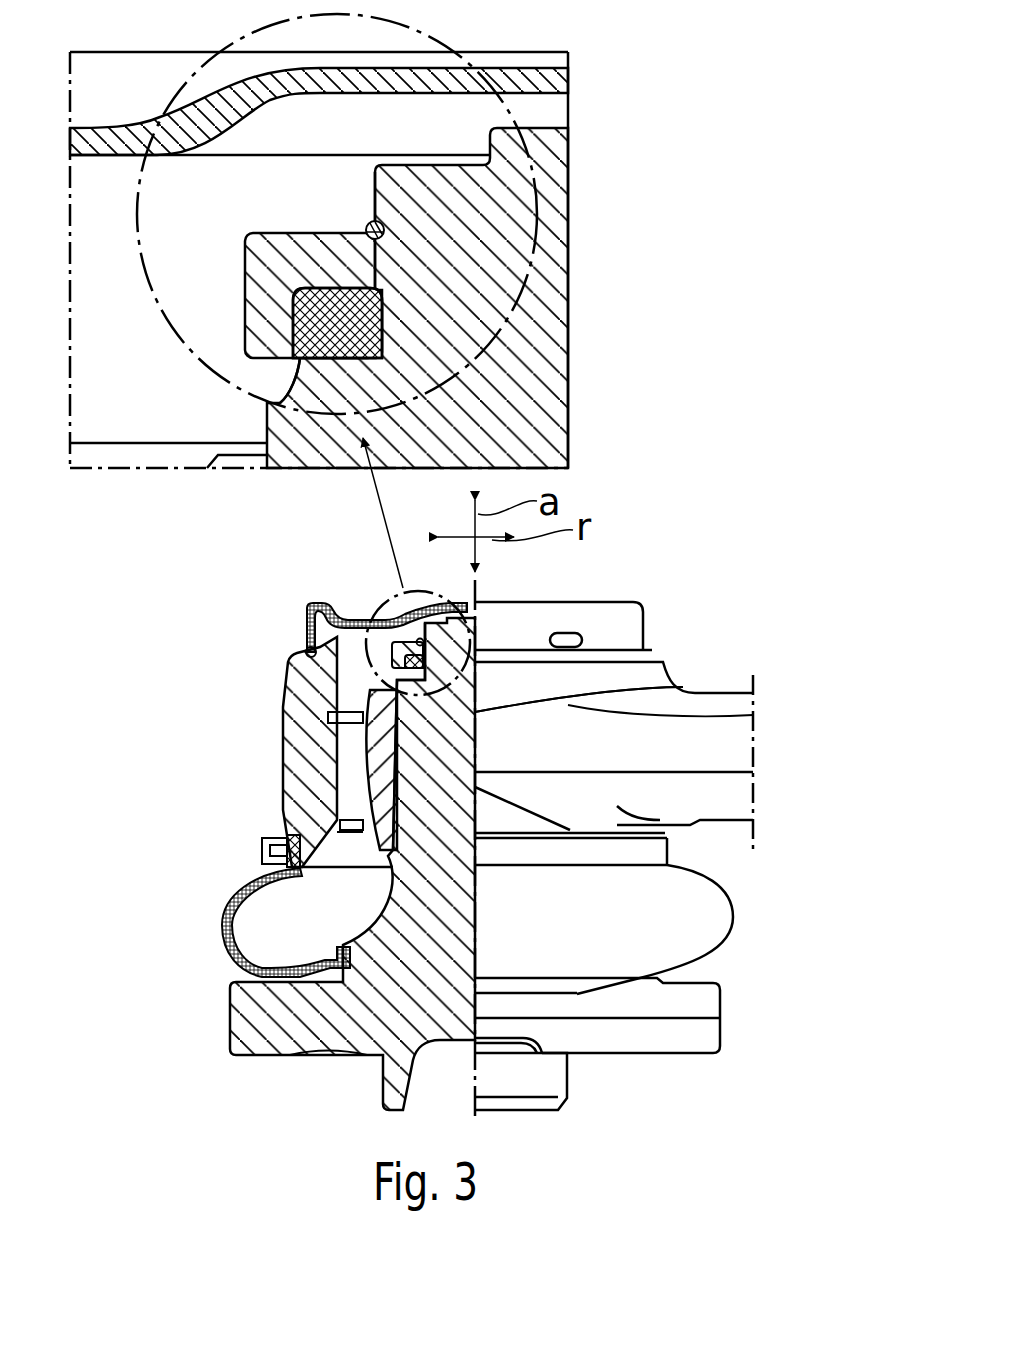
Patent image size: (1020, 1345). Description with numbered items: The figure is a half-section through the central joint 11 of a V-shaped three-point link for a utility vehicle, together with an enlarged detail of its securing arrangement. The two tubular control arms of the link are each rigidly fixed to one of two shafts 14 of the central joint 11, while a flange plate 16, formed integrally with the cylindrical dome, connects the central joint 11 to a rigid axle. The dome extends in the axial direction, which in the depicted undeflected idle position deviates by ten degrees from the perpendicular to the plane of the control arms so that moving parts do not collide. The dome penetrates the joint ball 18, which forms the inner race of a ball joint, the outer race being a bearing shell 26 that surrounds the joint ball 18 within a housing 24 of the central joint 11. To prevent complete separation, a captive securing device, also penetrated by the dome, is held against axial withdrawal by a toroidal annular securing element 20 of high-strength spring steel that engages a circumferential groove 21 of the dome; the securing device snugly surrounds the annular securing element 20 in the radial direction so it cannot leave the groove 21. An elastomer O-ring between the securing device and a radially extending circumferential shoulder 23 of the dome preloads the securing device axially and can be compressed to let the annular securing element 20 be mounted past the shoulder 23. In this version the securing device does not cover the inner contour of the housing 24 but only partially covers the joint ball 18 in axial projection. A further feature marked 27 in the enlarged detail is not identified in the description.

The central joint 11 is at (690, 636).
The shafts 14 is at (710, 743).
The flange plate 16 is at (275, 1013).
The joint ball 18 is at (350, 740).
The annular securing element 20 is at (397, 238).
The circumferential groove 21 is at (373, 220).
The circumferential shoulder 23 is at (382, 330).
The housing 24 is at (313, 818).
The bearing shell 26 is at (317, 790).
The contact region 27 is at (368, 228).